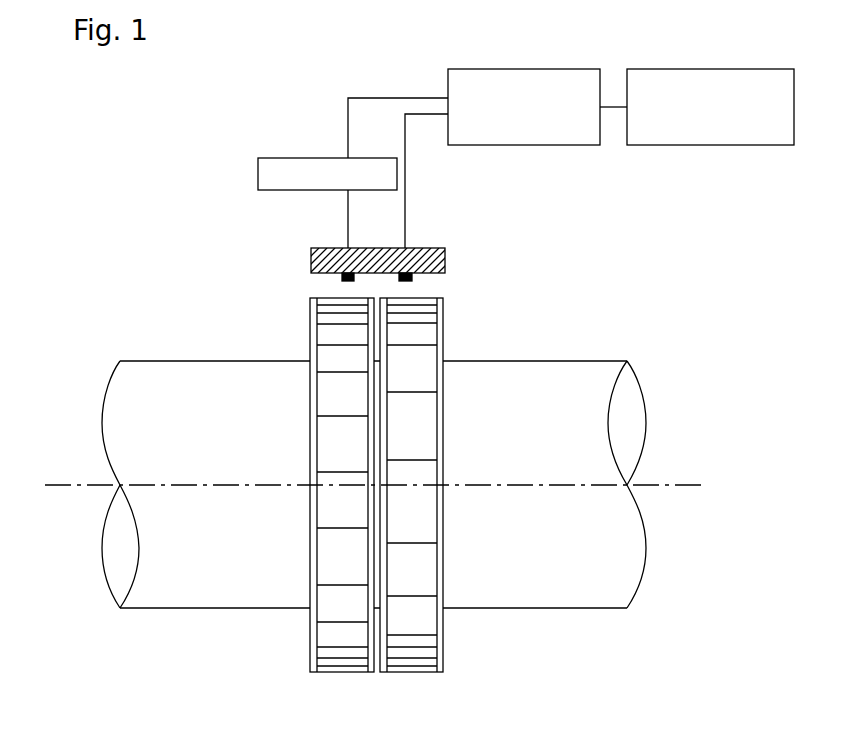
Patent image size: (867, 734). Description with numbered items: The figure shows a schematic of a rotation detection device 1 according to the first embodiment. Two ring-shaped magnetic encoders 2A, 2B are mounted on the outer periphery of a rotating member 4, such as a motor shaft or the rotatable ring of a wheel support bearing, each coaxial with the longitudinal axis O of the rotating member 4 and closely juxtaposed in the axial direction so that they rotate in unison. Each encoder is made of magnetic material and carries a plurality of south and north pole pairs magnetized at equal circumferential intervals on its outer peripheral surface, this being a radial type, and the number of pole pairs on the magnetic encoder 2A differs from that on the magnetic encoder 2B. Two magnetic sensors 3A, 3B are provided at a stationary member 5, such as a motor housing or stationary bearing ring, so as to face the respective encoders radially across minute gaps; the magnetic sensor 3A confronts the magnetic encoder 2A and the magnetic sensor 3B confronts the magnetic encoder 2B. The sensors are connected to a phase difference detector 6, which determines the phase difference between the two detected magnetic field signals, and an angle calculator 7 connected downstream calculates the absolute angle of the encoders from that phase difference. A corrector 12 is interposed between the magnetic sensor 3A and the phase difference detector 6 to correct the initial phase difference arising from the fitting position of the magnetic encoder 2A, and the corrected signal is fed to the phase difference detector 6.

The rotation detection device 1 is at (290, 237).
The magnetic encoder 2A is at (310, 448).
The magnetic encoder 2B is at (444, 444).
The magnetic sensor 3A is at (342, 284).
The magnetic sensor 3B is at (412, 281).
The rotating member 4 is at (213, 361).
The stationary member 5 is at (430, 248).
The phase difference detector 6 is at (528, 69).
The angle calculator 7 is at (708, 69).
The corrector 12 is at (330, 158).
The longitudinal axis O is at (63, 483).